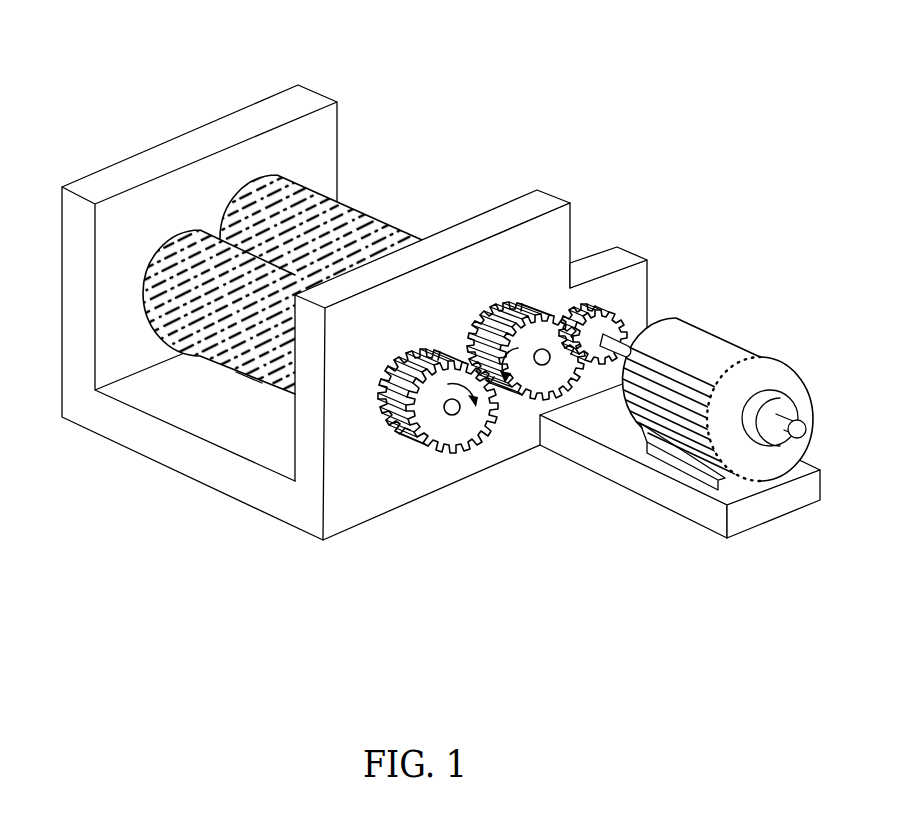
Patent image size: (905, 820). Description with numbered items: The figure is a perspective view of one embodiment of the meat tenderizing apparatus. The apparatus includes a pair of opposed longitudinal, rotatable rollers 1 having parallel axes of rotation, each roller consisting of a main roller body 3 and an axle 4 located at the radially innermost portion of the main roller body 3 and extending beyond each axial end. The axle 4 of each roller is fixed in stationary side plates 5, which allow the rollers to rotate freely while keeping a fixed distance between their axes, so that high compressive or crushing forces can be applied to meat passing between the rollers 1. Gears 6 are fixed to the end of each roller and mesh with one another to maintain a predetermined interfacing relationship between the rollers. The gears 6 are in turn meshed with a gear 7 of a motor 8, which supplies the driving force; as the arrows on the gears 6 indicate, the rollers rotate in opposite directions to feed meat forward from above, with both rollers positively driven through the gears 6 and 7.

The rollers 1 is at (188, 233).
The main roller body 3 is at (250, 375).
The axle 4 is at (457, 413).
The side plates 5 is at (78, 350).
The gears 6 is at (422, 433).
The gear of a motor 7 is at (617, 327).
The motor 8 is at (733, 348).